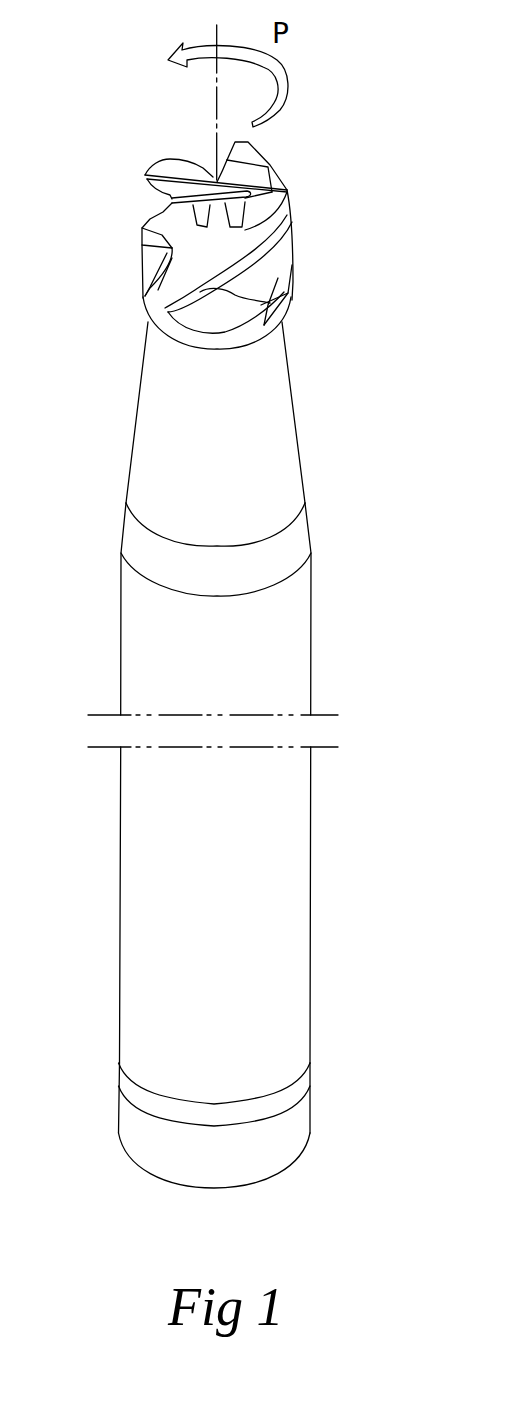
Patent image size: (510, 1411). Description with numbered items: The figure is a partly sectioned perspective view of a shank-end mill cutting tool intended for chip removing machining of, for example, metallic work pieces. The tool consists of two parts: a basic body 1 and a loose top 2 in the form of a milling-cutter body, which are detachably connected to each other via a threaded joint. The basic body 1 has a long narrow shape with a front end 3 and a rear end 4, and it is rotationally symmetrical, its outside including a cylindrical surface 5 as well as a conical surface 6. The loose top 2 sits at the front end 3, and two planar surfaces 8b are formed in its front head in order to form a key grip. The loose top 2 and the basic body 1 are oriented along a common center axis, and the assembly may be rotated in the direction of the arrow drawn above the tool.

The basic body 1 is at (313, 578).
The loose top 2 is at (300, 227).
The front end 3 is at (298, 332).
The rear end 4 is at (325, 1121).
The cylindrical surface 5 is at (230, 961).
The conical surface 6 is at (230, 461).
The planar surfaces 8b is at (145, 296).